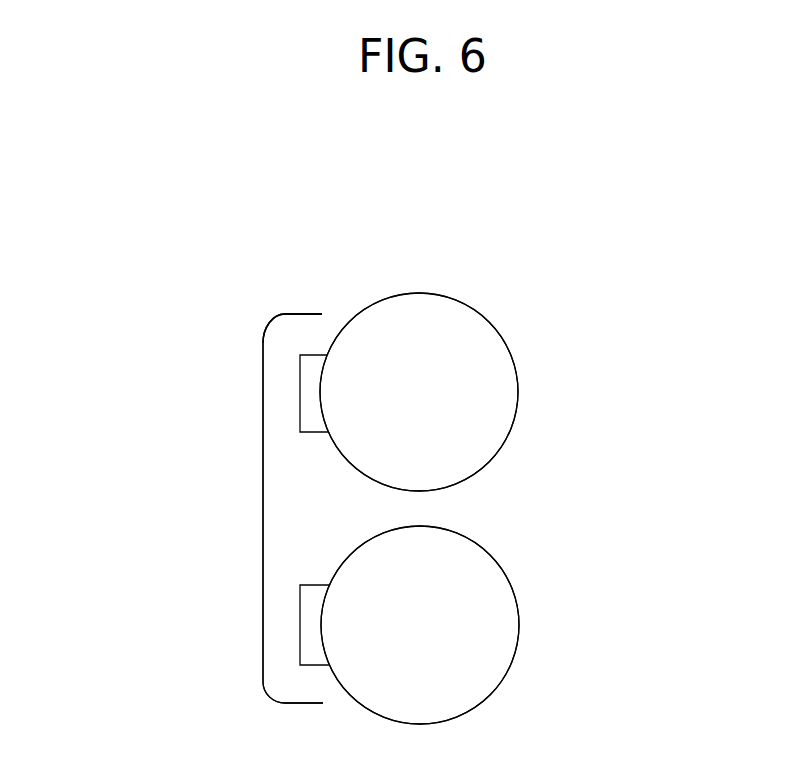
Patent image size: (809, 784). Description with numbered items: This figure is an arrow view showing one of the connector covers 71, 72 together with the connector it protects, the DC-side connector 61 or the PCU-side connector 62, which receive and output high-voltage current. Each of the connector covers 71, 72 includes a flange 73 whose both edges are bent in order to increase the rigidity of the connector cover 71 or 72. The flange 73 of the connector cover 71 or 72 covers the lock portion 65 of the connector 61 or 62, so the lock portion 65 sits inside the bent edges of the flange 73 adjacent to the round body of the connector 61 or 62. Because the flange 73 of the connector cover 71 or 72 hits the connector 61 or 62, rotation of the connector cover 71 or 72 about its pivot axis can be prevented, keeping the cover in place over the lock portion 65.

The DC-side connector 61 is at (512, 427).
The PCU-side connector 62 is at (512, 588).
The lock portion 65 is at (300, 643).
The connector cover 71 is at (263, 490).
The connector cover 72 is at (263, 490).
The flange 73 is at (303, 314).